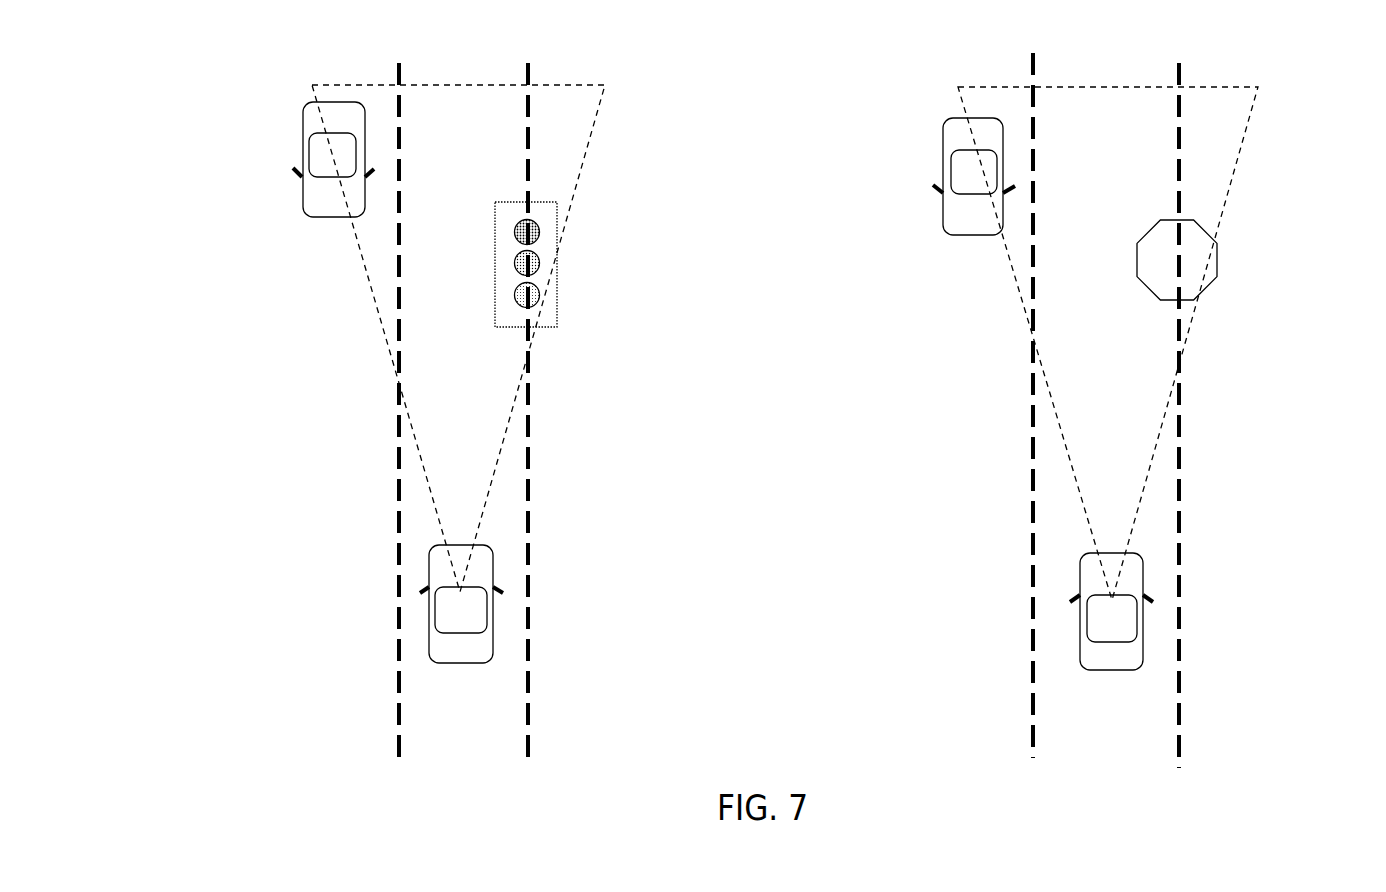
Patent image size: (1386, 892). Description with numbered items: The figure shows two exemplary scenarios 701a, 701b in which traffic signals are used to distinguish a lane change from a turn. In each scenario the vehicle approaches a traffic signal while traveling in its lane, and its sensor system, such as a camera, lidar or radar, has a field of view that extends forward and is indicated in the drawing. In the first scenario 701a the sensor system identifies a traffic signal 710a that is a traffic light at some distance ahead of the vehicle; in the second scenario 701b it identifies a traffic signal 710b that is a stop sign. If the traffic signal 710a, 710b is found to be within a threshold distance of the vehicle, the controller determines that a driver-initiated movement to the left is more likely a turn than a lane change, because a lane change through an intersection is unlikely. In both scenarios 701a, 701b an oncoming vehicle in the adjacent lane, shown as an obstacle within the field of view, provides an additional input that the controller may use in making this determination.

The scenario 701a is at (193, 122).
The scenario 701b is at (1285, 95).
The traffic signal 710a is at (557, 300).
The traffic signal 710b is at (1218, 278).